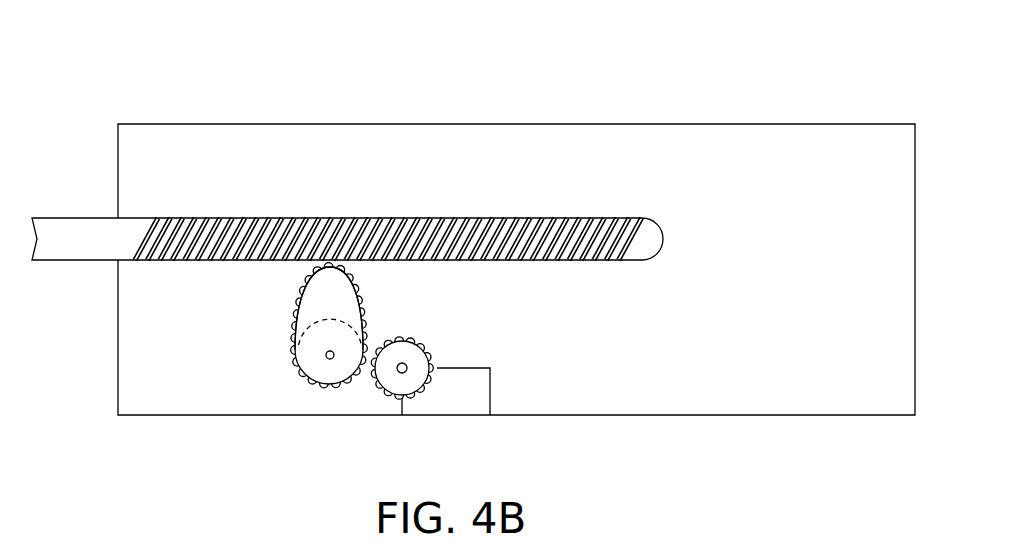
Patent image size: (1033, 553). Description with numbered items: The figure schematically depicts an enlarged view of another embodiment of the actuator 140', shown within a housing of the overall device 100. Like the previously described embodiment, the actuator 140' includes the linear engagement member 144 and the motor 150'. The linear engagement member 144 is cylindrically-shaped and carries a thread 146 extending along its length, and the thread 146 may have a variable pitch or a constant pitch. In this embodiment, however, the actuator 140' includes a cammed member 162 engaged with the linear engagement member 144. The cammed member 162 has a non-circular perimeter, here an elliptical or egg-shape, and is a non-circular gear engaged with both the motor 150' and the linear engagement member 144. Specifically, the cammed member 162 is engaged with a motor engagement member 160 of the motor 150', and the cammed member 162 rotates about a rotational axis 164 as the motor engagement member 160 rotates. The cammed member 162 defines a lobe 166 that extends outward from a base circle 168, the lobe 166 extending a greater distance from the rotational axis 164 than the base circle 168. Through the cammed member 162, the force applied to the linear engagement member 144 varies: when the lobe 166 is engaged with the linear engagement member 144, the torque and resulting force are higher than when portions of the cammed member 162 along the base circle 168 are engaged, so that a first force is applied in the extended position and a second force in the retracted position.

The surgical device 100 is at (491, 214).
The actuator 140' is at (516, 214).
The linear engagement member 144 is at (347, 186).
The thread 146 is at (169, 217).
The motor 150' is at (486, 390).
The motor engagement member 160 is at (413, 358).
The cammed member 162 is at (290, 287).
The rotational axis 164 is at (326, 356).
The lobe 166 is at (329, 265).
The base circle 168 is at (359, 318).